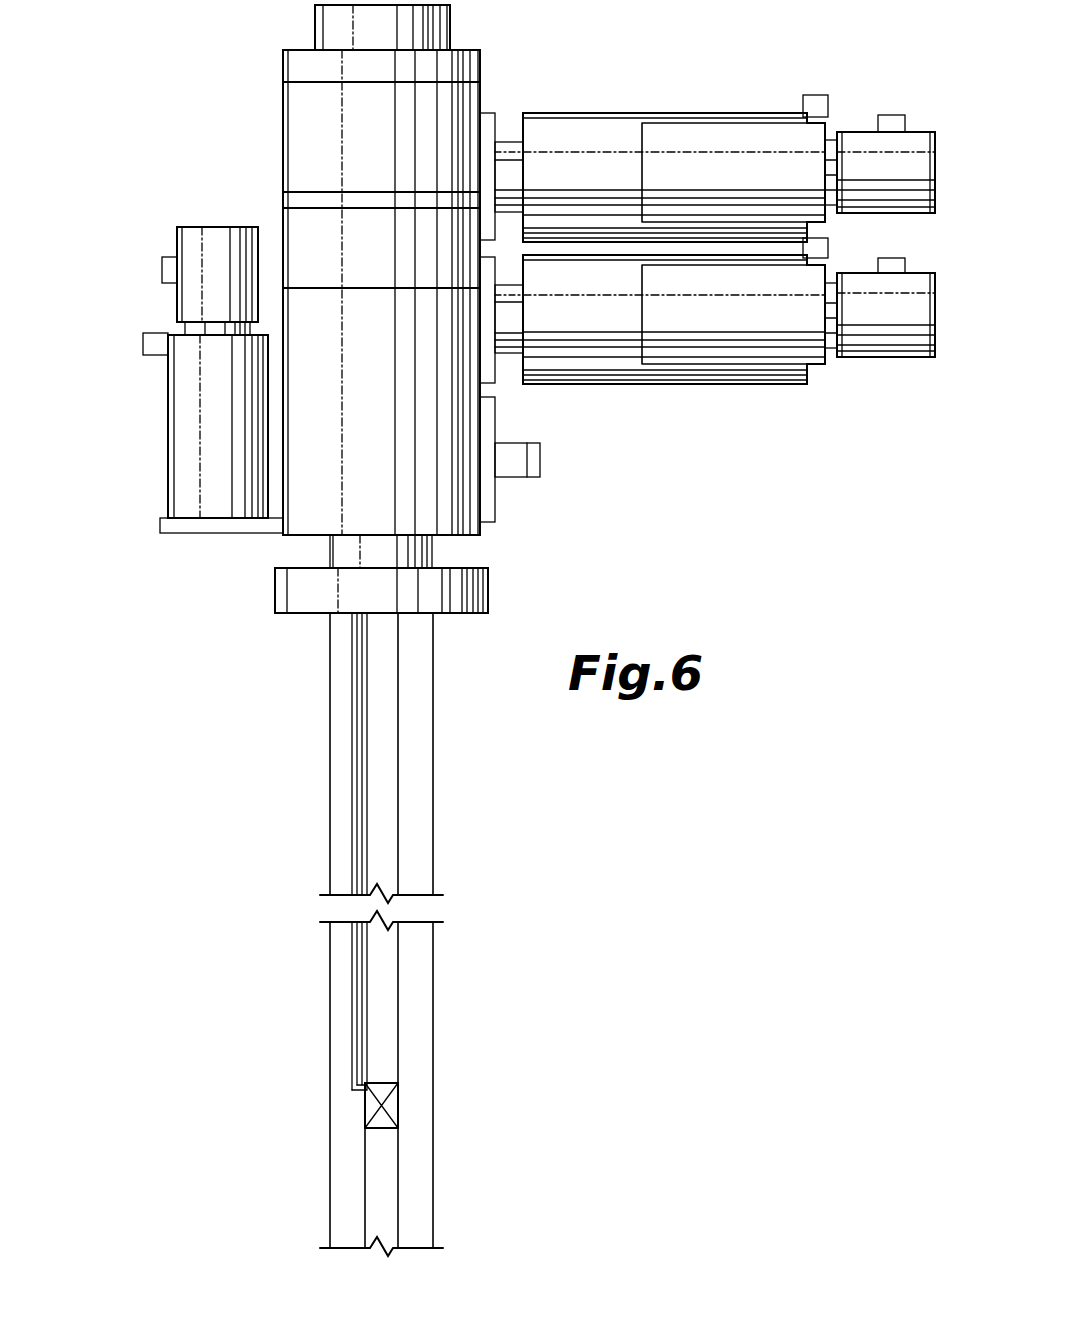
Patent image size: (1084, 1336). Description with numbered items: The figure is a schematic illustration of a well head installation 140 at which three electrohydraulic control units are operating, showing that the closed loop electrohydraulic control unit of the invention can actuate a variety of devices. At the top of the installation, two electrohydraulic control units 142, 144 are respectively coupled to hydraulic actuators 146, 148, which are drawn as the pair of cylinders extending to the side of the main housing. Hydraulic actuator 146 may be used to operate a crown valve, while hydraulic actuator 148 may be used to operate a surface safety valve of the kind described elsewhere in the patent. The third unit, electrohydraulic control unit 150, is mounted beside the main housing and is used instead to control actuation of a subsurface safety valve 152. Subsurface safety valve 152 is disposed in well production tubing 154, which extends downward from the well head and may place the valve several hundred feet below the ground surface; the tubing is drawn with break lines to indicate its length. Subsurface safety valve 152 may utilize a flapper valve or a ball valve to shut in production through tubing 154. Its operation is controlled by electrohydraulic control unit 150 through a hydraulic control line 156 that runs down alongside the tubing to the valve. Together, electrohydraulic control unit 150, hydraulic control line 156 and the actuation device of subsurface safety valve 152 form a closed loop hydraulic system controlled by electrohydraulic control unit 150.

The well head installation 140 is at (200, 100).
The electrohydraulic control unit 142 is at (848, 130).
The electrohydraulic control unit 144 is at (815, 362).
The hydraulic actuator 146 is at (575, 112).
The hydraulic actuator 148 is at (592, 372).
The electrohydraulic control unit 150 is at (178, 434).
The subsurface safety valve 152 is at (390, 1108).
The well production tubing 154 is at (392, 1028).
The hydraulic control line 156 is at (355, 1070).